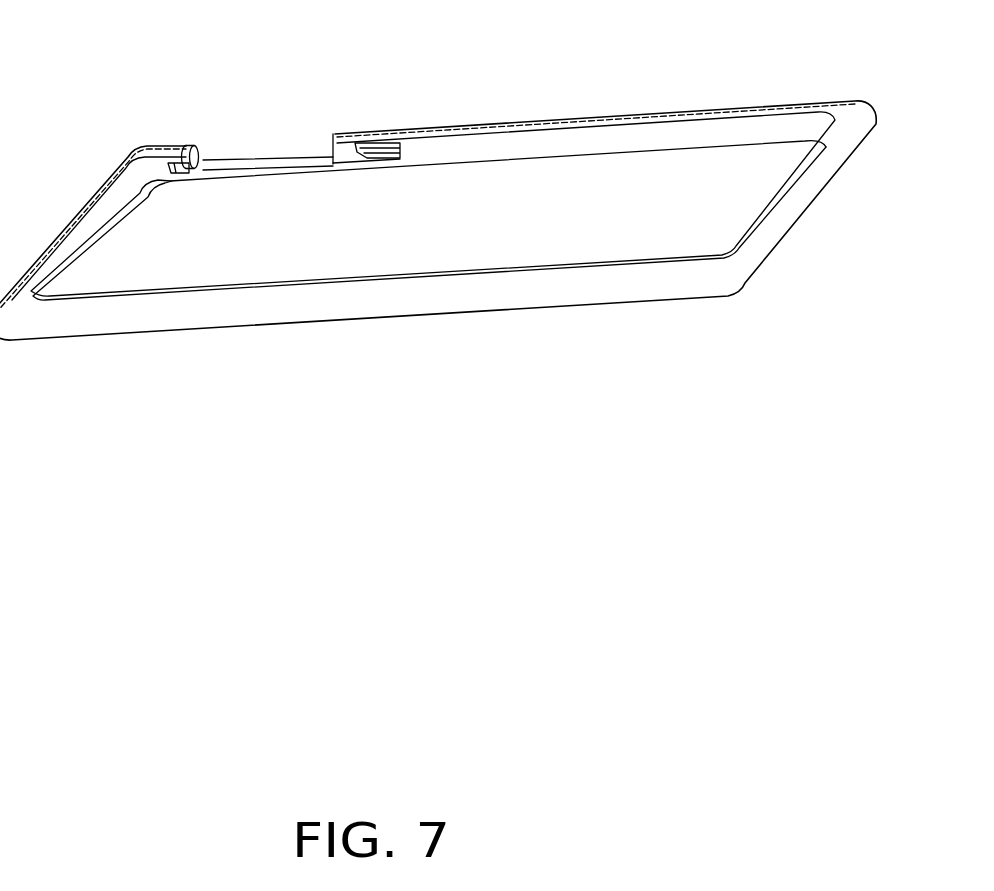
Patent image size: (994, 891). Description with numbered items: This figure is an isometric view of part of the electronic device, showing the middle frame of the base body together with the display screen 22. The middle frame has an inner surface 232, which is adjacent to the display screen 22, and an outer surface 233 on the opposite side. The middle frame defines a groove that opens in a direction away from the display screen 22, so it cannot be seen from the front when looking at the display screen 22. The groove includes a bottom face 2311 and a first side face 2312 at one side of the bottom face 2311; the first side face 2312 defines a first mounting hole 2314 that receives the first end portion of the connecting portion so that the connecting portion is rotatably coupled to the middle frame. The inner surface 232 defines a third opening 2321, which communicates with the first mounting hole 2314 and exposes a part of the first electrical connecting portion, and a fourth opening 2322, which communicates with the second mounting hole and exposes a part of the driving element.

The display screen 22 is at (553, 240).
The inner surface 232 is at (550, 145).
The outer surface 233 is at (630, 275).
The bottom face 2311 is at (290, 160).
The first side face 2312 is at (193, 146).
The first mounting hole 2314 is at (209, 155).
The third opening 2321 is at (178, 183).
The fourth opening 2322 is at (376, 158).